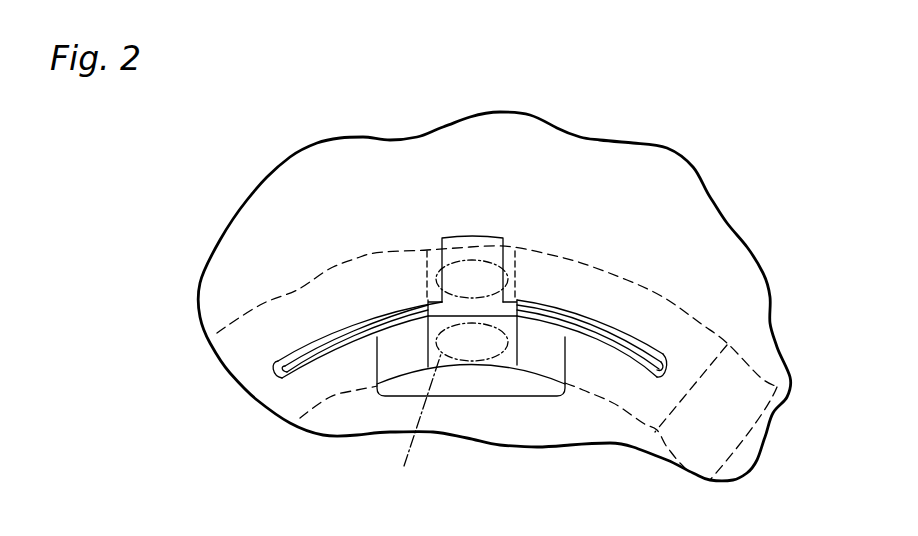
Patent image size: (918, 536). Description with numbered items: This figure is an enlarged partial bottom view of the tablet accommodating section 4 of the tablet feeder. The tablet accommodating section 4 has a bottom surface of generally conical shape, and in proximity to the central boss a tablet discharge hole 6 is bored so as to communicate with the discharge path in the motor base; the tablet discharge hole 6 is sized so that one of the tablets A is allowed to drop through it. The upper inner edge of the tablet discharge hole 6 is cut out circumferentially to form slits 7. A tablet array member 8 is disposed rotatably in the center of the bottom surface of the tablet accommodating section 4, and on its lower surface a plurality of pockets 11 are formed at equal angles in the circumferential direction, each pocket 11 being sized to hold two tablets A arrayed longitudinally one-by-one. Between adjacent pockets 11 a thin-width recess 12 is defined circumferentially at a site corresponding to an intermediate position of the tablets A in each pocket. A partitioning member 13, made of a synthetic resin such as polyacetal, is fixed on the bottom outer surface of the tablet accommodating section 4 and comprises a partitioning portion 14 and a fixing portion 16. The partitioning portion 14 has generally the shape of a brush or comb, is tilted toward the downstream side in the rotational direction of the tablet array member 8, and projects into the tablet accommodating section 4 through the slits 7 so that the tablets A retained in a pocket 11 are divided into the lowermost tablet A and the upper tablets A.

The tablet accommodating section 4 is at (395, 162).
The tablet discharge hole 6 is at (565, 368).
The slits 7 is at (300, 347).
The tablet array member 8 is at (357, 254).
The pockets 11 is at (493, 367).
The thin-width recess 12 is at (272, 366).
The partitioning member 13 is at (512, 151).
The partitioning portion 14 is at (561, 324).
The fixing portion 16 is at (487, 255).
The tablets A is at (414, 425).